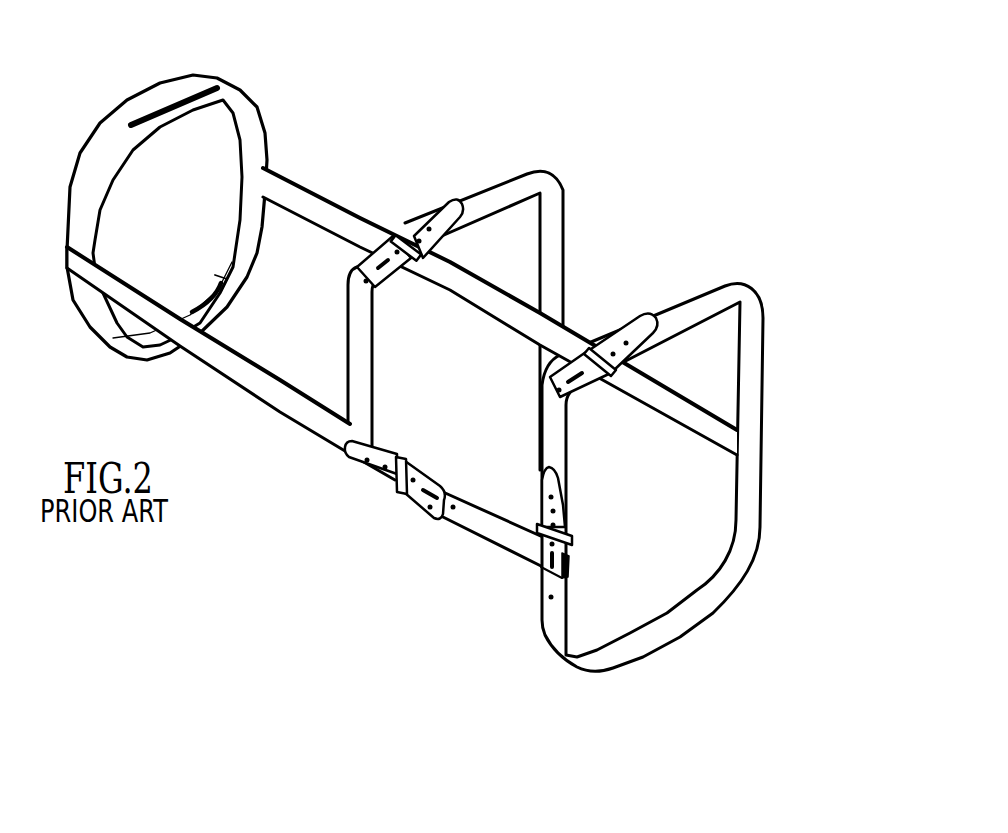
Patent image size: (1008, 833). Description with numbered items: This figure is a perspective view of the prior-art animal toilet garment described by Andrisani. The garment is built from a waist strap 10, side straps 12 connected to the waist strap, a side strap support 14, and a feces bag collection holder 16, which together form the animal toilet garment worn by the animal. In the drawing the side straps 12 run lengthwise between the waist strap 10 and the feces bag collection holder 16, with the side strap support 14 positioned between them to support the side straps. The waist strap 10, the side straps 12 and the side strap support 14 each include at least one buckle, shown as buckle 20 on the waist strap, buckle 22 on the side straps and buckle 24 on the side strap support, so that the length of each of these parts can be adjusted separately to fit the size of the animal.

The waist strap 10 is at (680, 317).
The side straps 12 is at (332, 217).
The side strap support 14 is at (502, 193).
The feces bag collection holder 16 is at (118, 134).
The buckle 20 is at (553, 393).
The buckle 22 is at (397, 493).
The buckle 24 is at (402, 233).